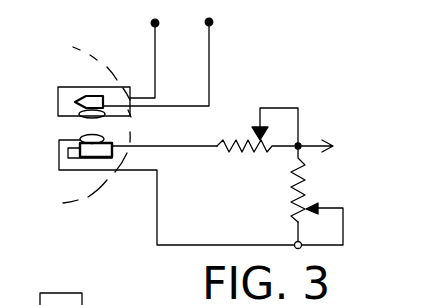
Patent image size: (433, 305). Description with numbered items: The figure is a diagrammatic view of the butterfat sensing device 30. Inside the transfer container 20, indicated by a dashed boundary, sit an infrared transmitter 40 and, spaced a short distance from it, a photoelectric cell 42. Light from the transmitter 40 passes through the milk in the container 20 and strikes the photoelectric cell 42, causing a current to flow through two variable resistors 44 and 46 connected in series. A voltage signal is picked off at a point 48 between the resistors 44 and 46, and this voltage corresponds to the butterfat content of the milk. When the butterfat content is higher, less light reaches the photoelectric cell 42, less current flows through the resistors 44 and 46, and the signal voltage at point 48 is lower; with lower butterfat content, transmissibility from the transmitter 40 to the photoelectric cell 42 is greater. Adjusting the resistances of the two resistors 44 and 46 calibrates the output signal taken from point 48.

The transfer container 20 is at (100, 196).
The butterfat sensing device 30 is at (138, 205).
The infrared transmitter 40 is at (97, 100).
The photoelectric cell 42 is at (92, 137).
The variable resistor 44 is at (251, 151).
The variable resistor 46 is at (310, 190).
The point 48 is at (301, 145).